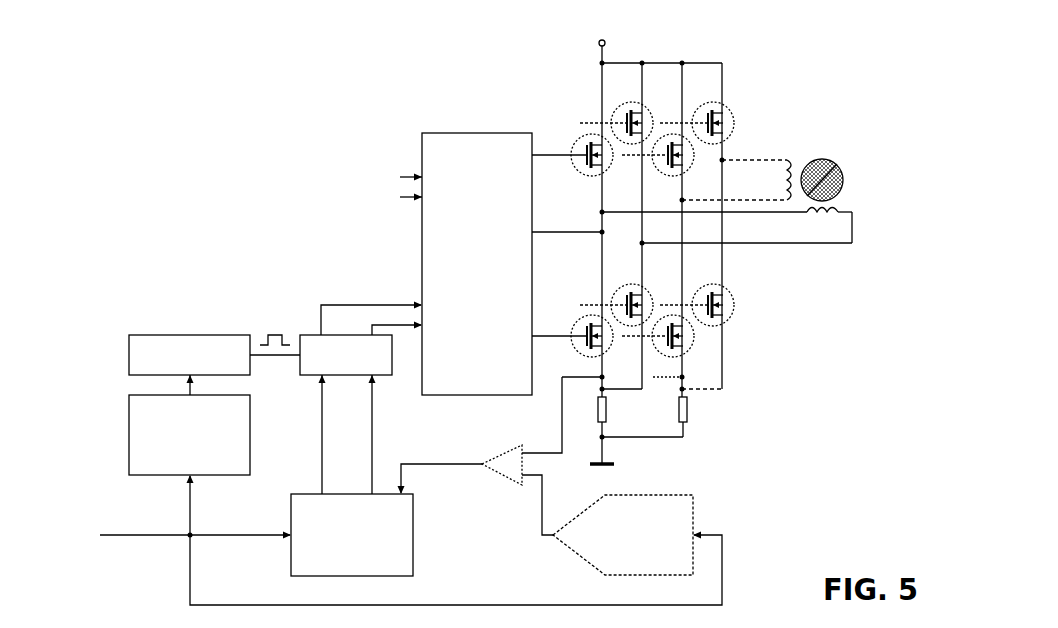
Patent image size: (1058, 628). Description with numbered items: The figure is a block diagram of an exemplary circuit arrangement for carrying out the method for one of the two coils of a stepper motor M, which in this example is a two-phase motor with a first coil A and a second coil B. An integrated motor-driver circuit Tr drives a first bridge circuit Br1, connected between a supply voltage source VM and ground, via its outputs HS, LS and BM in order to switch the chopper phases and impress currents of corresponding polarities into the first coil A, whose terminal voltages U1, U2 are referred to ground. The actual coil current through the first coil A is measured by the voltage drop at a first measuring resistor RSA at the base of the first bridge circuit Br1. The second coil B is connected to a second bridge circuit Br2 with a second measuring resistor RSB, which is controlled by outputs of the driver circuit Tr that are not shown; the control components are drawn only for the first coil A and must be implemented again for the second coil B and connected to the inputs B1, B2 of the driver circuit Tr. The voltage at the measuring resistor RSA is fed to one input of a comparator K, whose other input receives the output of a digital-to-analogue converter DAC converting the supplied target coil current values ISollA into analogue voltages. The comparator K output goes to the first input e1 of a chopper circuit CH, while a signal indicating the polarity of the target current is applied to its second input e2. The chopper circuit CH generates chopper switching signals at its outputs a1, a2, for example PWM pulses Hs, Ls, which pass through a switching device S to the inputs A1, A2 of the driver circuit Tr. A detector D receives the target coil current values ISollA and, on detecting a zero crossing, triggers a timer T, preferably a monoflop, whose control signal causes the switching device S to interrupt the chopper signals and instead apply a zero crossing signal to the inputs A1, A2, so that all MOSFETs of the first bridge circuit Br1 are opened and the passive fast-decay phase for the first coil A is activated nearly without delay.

The supply voltage source VM is at (654, 203).
The first bridge circuit Br1 is at (562, 98).
The second bridge circuit Br2 is at (740, 337).
The high side output HS is at (559, 144).
The bridge centre output BM is at (568, 223).
The low side output LS is at (559, 325).
The integrated motor-driver circuit Tr is at (477, 264).
The driver circuit input B1 is at (425, 176).
The driver circuit input B2 is at (425, 196).
The driver circuit input A1 is at (433, 305).
The driver circuit input A2 is at (433, 325).
The PWM pulse Hs is at (371, 308).
The PWM pulse Ls is at (383, 319).
The timer T is at (214, 355).
The switching device S is at (346, 355).
The detector D is at (189, 425).
The chopper circuit CH is at (352, 535).
The chopper circuit output a1 is at (310, 434).
The chopper circuit output a2 is at (358, 434).
The first input of chopper circuit e1 is at (432, 492).
The second input of chopper circuit e2 is at (300, 541).
The target coil current value ISollA is at (369, 540).
The comparator K is at (522, 456).
The digital-to-analogue converter DAC is at (623, 535).
The first measuring resistor RSA is at (615, 430).
The second measuring resistor RSB is at (662, 417).
The second coil B is at (736, 180).
The stepper motor M is at (822, 169).
The first coil A is at (822, 222).
The coil voltage U1 is at (726, 227).
The coil voltage U2 is at (746, 257).